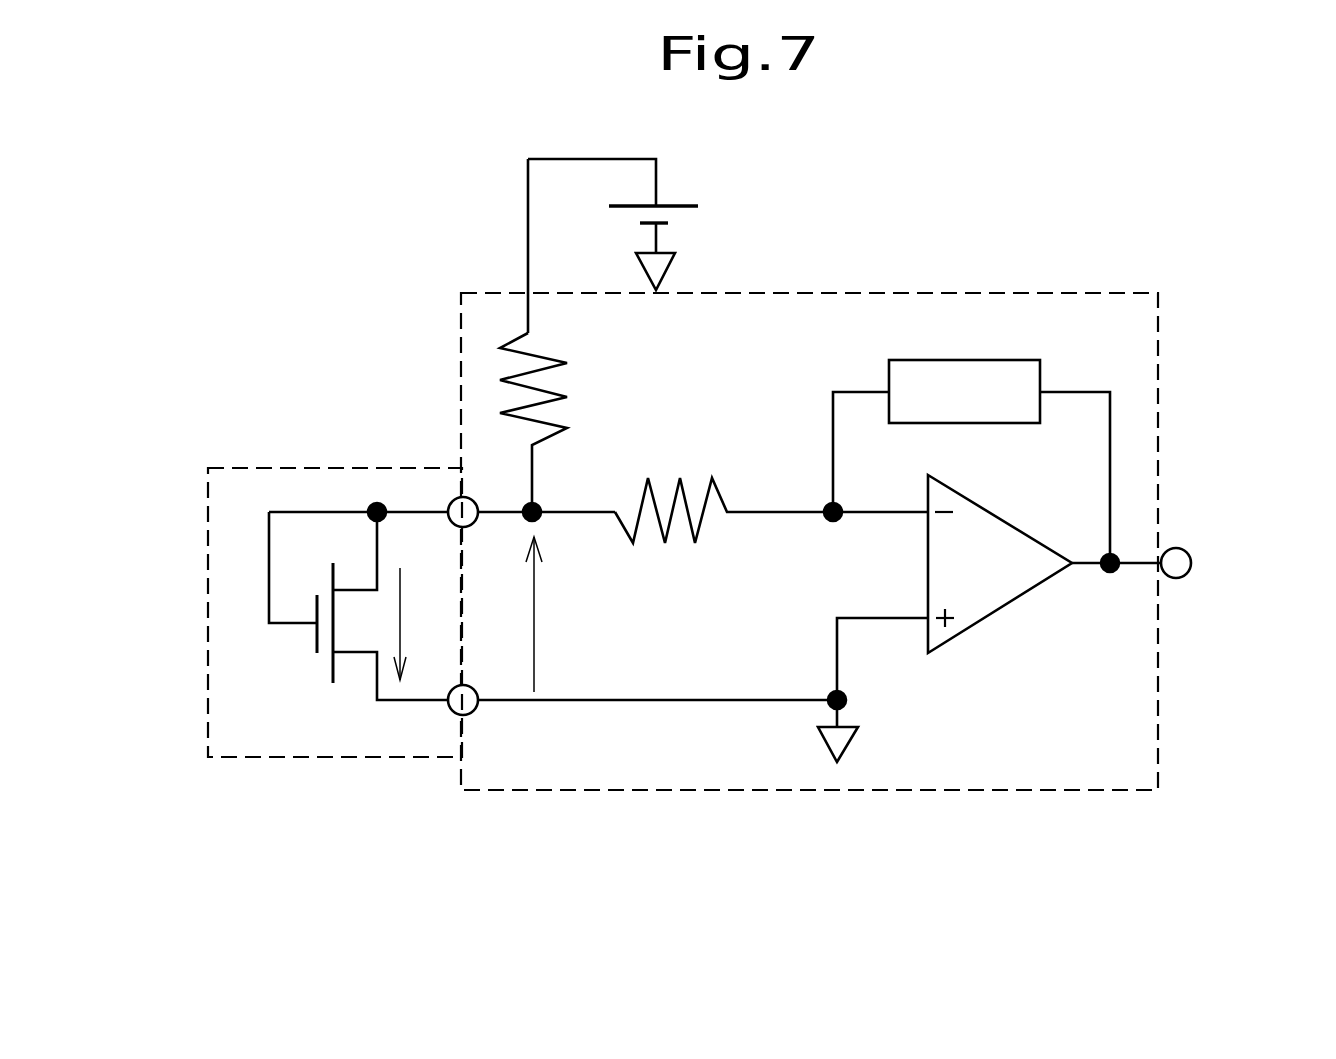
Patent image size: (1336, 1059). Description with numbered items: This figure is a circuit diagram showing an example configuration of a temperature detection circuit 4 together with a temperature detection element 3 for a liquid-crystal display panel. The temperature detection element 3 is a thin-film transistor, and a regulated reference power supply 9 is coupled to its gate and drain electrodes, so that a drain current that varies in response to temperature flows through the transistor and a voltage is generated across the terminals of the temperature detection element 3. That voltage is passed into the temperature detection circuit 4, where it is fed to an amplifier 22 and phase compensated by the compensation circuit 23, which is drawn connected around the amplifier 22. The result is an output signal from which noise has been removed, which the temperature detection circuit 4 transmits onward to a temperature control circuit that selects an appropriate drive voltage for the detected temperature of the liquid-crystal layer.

The regulated reference power supply 9 is at (683, 204).
The compensation circuit 23 is at (955, 383).
The amplifier 22 is at (995, 573).
The temperature detection element 3 is at (208, 757).
The temperature detection circuit 4 is at (715, 790).